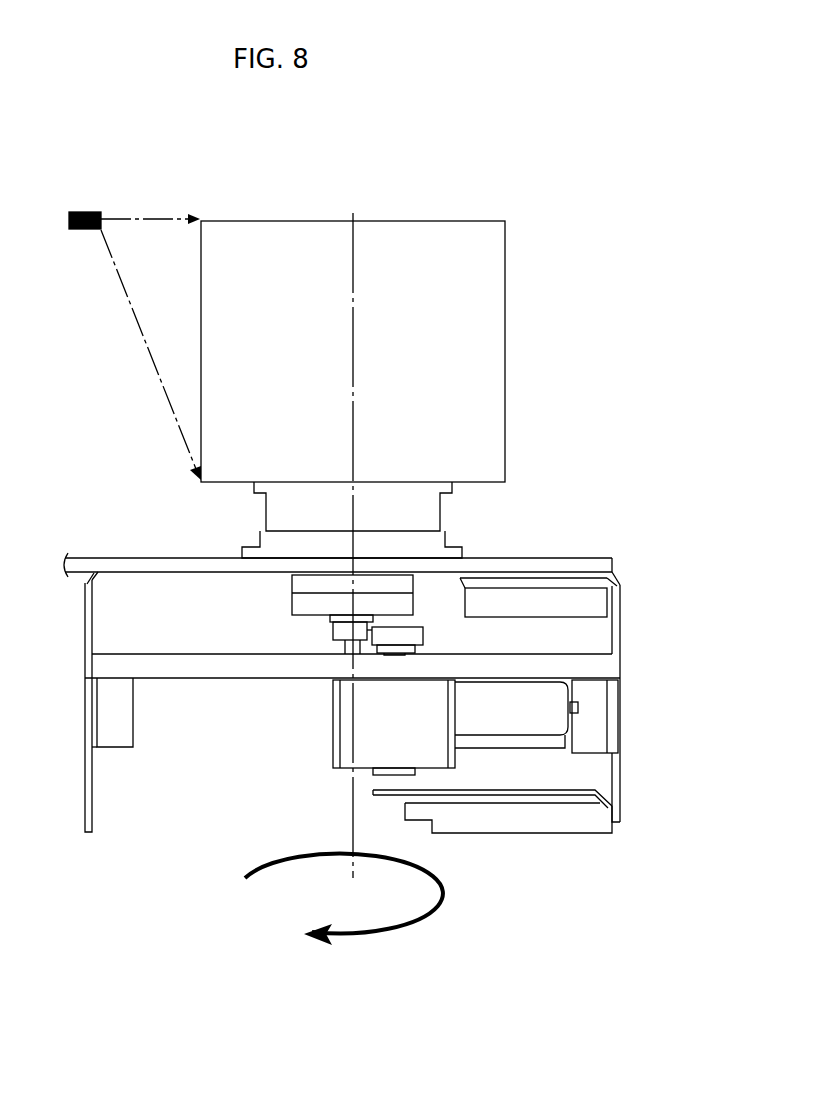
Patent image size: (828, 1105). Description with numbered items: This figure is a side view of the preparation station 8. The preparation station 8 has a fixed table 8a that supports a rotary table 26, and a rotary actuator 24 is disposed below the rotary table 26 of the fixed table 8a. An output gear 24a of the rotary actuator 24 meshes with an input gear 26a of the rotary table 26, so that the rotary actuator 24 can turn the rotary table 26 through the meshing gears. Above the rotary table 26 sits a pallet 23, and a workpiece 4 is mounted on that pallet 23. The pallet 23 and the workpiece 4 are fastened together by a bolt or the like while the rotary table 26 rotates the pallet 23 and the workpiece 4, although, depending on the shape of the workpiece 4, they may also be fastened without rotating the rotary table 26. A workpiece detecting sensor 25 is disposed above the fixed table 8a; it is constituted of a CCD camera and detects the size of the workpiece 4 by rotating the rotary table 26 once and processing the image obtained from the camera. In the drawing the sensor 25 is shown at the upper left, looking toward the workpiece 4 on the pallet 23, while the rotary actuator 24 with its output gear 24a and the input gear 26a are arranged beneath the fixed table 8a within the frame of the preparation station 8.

The workpiece 4 is at (492, 286).
The preparation station 8 is at (592, 450).
The fixed table 8a is at (547, 562).
The pallet 23 is at (275, 502).
The rotary actuator 24 is at (333, 718).
The output gear 24a is at (418, 629).
The workpiece detecting sensor 25 is at (85, 212).
The rotary table 26 is at (258, 537).
The input gear 26a is at (333, 638).